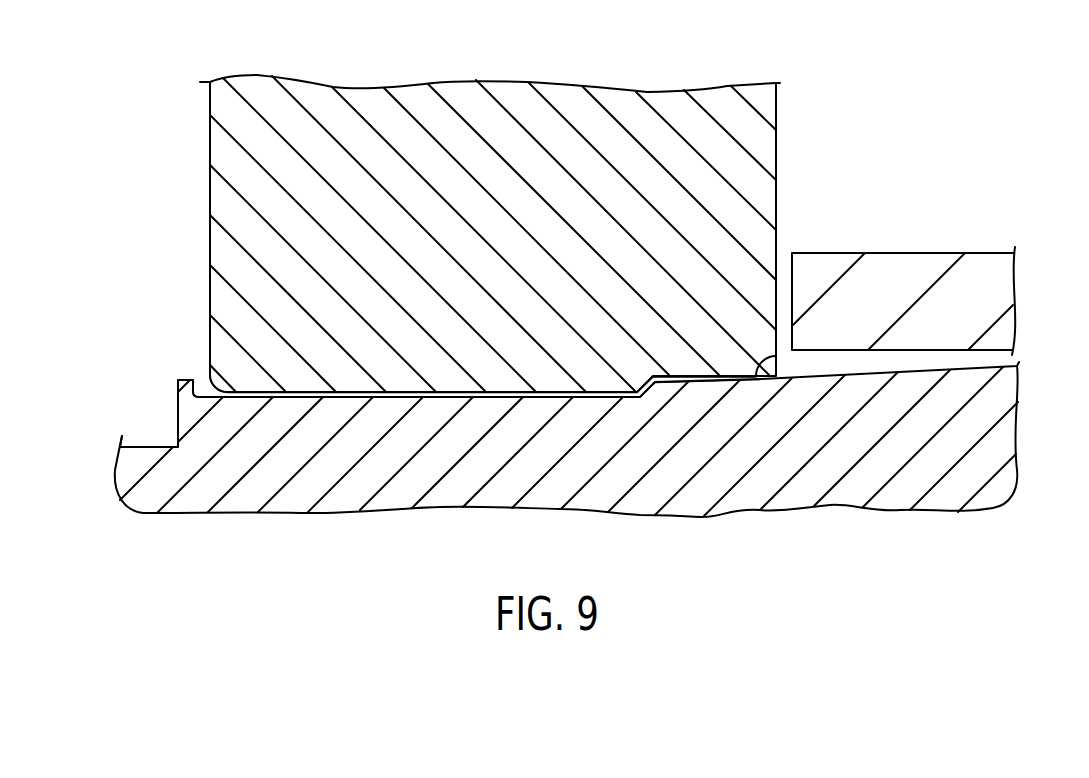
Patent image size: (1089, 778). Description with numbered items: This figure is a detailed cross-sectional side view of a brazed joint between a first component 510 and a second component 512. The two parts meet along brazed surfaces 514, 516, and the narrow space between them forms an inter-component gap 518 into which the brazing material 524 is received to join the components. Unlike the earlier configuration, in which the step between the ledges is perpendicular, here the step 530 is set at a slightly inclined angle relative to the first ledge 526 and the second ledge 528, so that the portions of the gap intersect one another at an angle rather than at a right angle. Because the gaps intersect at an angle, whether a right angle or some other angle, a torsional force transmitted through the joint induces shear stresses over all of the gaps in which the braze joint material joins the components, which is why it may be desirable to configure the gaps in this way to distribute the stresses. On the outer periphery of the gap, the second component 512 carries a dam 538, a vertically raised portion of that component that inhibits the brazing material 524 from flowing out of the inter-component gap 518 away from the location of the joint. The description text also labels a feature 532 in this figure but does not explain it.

The first component 510 is at (507, 90).
The second component 512 is at (1005, 440).
The brazed surface 514 is at (397, 392).
The brazed surface 516 is at (348, 398).
The inter-component gap 518 is at (450, 398).
The brazing material 524 is at (926, 270).
The first ledge 526 is at (692, 370).
The second ledge 528 is at (281, 404).
The step 530 is at (658, 392).
The fillet 532 is at (766, 352).
The dam 538 is at (190, 382).